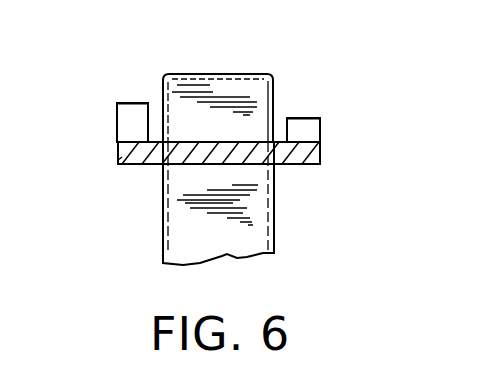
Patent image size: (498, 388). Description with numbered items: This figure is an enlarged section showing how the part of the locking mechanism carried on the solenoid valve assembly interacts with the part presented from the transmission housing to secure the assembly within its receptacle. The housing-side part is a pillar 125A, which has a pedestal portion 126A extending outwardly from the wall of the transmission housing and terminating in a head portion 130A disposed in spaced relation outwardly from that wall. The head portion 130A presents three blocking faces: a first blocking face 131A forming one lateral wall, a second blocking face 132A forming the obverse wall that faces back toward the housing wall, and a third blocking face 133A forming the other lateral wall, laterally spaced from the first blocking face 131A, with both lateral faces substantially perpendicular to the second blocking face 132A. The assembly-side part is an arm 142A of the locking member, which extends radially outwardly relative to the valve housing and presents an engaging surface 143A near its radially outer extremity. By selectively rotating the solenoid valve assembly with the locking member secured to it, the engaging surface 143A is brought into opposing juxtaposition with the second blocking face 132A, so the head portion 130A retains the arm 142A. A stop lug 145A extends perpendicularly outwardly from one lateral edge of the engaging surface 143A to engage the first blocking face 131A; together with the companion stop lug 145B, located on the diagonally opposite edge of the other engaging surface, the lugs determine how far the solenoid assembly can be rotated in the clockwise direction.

The pillar 125A is at (275, 74).
The pedestal portion 126A is at (187, 242).
The head portion 130A is at (214, 88).
The first blocking face 131A is at (162, 122).
The second blocking face 132A is at (247, 142).
The third blocking face 133A is at (273, 108).
The arm 142A is at (190, 157).
The engaging surface 143A is at (183, 142).
The stop lug 145A is at (128, 128).
The stop lug 145B is at (307, 128).